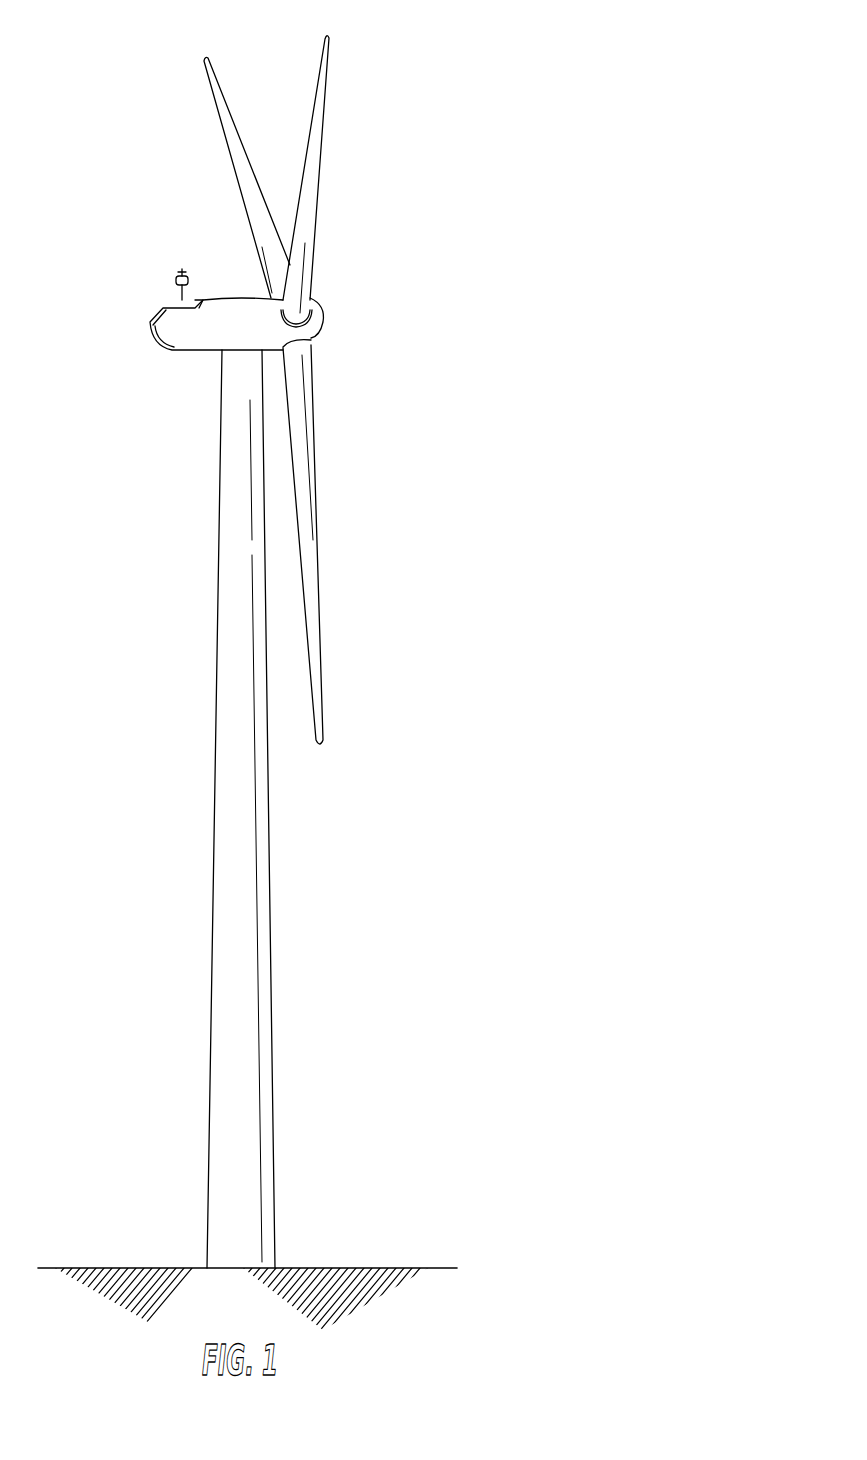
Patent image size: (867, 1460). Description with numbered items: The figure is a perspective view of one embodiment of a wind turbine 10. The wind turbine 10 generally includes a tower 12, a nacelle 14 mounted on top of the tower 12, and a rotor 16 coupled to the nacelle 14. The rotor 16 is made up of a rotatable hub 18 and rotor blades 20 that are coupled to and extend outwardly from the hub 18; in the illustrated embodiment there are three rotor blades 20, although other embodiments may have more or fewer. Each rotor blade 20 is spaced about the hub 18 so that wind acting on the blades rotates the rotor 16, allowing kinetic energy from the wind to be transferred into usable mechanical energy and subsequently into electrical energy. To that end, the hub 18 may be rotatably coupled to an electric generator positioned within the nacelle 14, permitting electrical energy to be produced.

The wind turbine 10 is at (432, 122).
The tower 12 is at (225, 933).
The nacelle 14 is at (195, 353).
The rotor 16 is at (334, 293).
The rotatable hub 18 is at (325, 328).
The rotor blade 20 is at (317, 92).